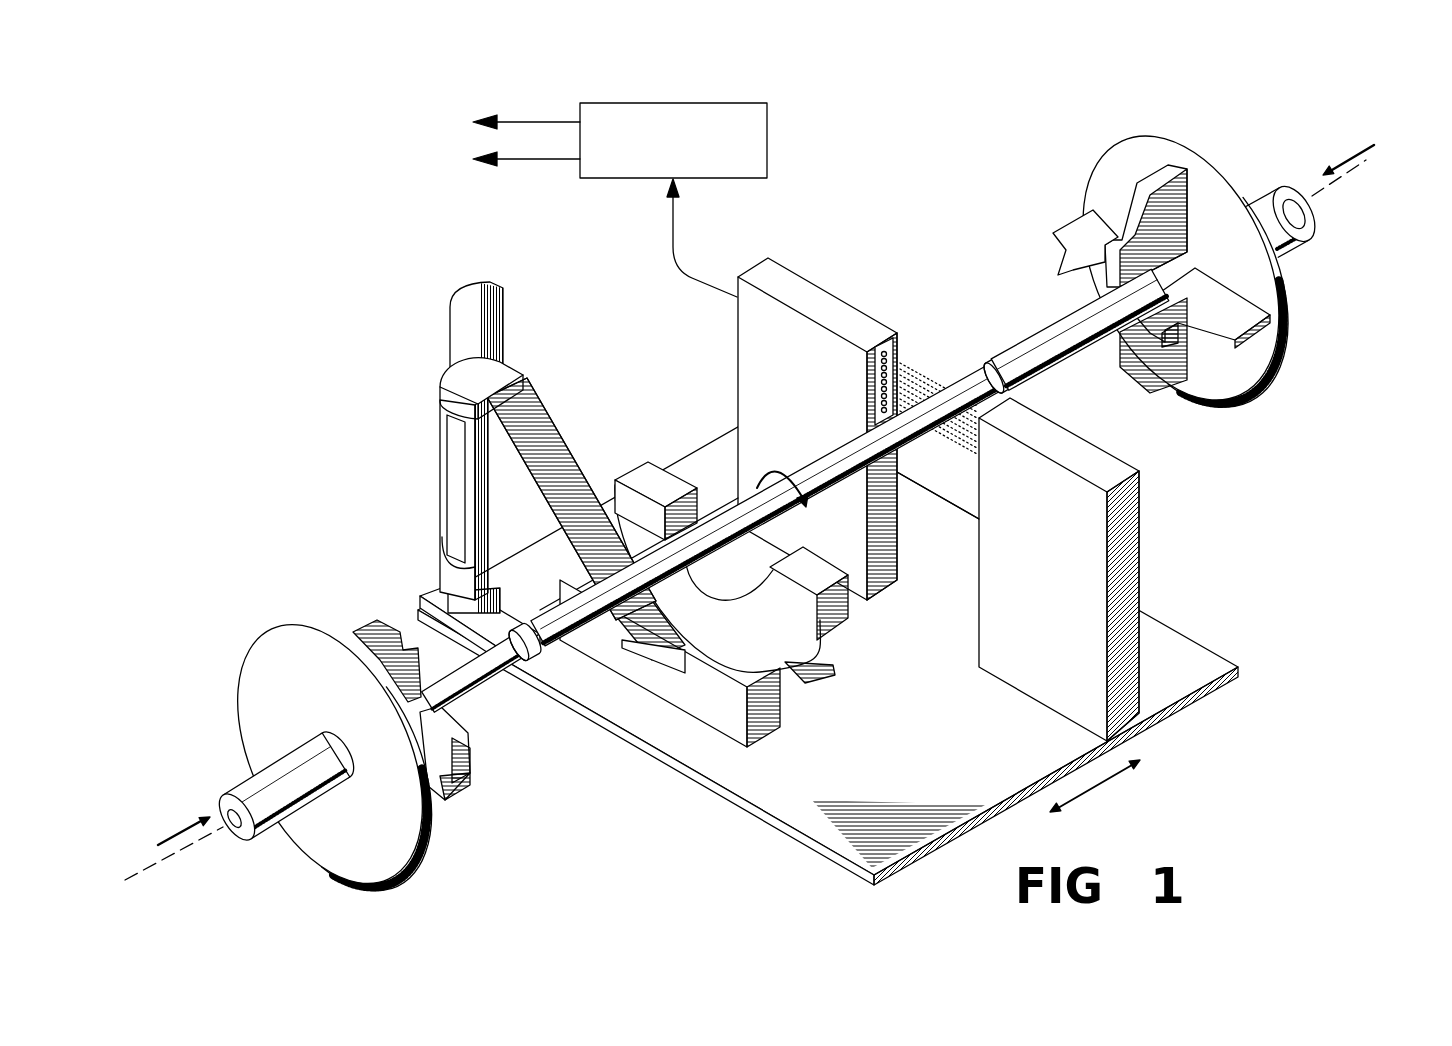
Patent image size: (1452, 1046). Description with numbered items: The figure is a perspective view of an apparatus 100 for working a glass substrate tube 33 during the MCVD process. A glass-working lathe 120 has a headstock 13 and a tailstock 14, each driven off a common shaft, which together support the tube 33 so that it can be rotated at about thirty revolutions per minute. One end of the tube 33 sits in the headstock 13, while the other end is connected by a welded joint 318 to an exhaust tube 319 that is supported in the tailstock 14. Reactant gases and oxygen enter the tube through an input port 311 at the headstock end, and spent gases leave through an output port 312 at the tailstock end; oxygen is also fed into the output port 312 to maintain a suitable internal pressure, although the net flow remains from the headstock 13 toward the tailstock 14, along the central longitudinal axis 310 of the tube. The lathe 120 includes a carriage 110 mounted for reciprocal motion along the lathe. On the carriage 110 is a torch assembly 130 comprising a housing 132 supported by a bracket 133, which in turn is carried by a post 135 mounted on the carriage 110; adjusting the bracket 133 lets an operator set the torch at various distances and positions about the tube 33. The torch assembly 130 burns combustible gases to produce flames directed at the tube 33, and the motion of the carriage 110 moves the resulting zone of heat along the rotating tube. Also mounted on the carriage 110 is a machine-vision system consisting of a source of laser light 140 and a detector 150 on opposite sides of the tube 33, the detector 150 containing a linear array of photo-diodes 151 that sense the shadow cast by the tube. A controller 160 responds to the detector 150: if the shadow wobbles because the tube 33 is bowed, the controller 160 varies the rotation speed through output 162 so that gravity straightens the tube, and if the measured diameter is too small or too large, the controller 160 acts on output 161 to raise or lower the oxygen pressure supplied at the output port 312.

The headstock 13 is at (1097, 191).
The tailstock 14 is at (247, 673).
The glass substrate tube 33 is at (843, 447).
The apparatus 100 is at (882, 166).
The carriage 110 is at (1226, 652).
The glass-working lathe 120 is at (366, 615).
The torch assembly 130 is at (638, 455).
The housing 132 is at (837, 620).
The bracket 133 is at (525, 408).
The post 135 is at (457, 332).
The source of laser light 140 is at (1141, 542).
The detector 150 is at (745, 353).
The linear array of photo-diodes 151 is at (901, 344).
The controller 160 is at (673, 103).
The output 161 is at (553, 122).
The output 162 is at (552, 163).
The central longitudinal axis 310 is at (160, 866).
The input port 311 is at (1321, 205).
The output port 312 is at (235, 823).
The welded joint 318 is at (528, 622).
The exhaust tube 319 is at (497, 692).